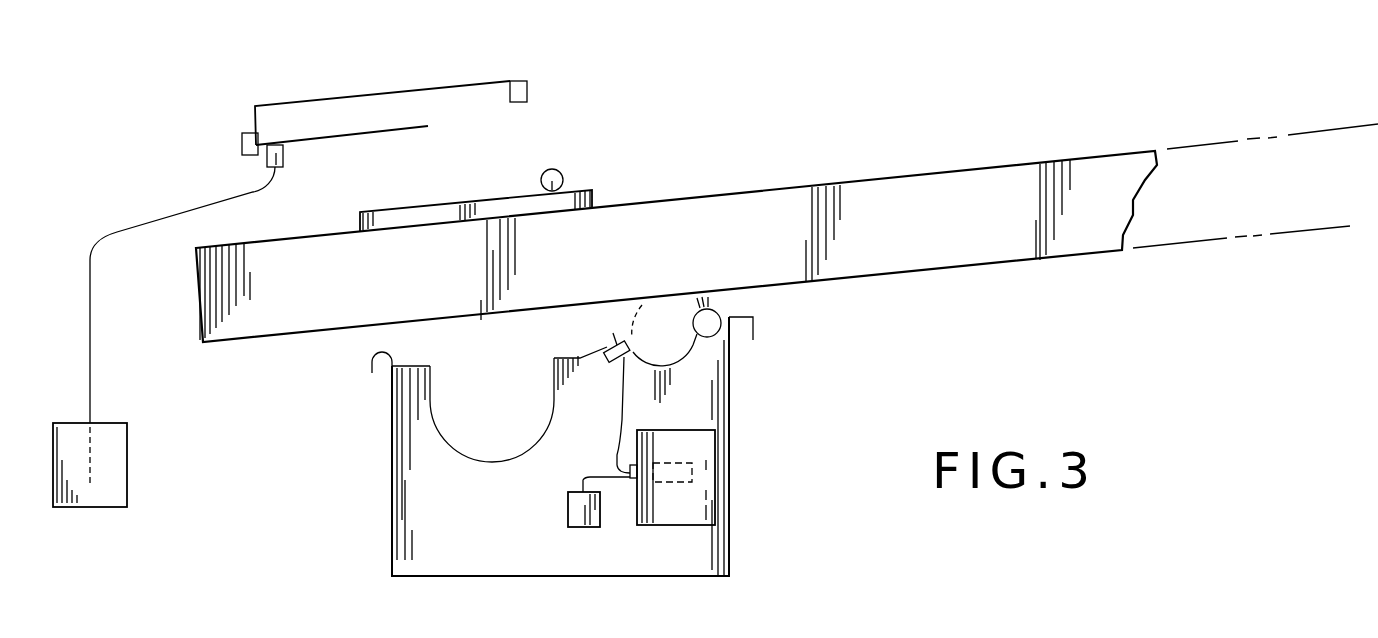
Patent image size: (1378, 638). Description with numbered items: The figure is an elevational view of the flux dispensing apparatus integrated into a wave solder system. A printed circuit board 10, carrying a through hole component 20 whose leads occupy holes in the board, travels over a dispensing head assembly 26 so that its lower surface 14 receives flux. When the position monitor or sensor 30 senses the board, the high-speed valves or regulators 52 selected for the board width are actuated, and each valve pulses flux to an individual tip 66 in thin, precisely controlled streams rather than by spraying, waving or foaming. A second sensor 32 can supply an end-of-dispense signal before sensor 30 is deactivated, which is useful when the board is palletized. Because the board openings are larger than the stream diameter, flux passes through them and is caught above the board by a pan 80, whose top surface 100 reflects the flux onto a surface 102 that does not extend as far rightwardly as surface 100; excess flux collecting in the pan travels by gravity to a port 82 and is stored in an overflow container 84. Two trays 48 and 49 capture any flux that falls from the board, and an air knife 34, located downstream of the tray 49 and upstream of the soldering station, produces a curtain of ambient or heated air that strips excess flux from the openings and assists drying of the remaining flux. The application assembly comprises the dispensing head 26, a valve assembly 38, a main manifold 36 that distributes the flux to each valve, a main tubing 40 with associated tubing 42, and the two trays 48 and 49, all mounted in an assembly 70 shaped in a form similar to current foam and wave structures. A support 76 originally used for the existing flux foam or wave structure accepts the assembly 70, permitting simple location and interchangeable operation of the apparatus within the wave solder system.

The board 10 is at (593, 197).
The second or lower surface 14 is at (370, 210).
The through hole component 20 is at (557, 171).
The dispensing head assembly 26 is at (641, 336).
The position monitor or sensor 30 is at (528, 88).
The sensor 32 is at (243, 135).
The air knife 34 is at (712, 310).
The main manifold 36 is at (578, 529).
The valve assembly 38 is at (714, 528).
The main tubing 40 is at (622, 393).
The associated tubing 42 is at (593, 472).
The tray 48 is at (432, 436).
The tray 49 is at (681, 366).
The high-speed valve or regulator 52 is at (693, 473).
The individual tip 66 is at (608, 338).
The assembly 70 is at (569, 429).
The support 76 is at (371, 370).
The pan 80 is at (391, 103).
The port 82 is at (263, 163).
The overflow container 84 is at (129, 479).
The top surface 100 is at (463, 85).
The surface 102 is at (343, 136).